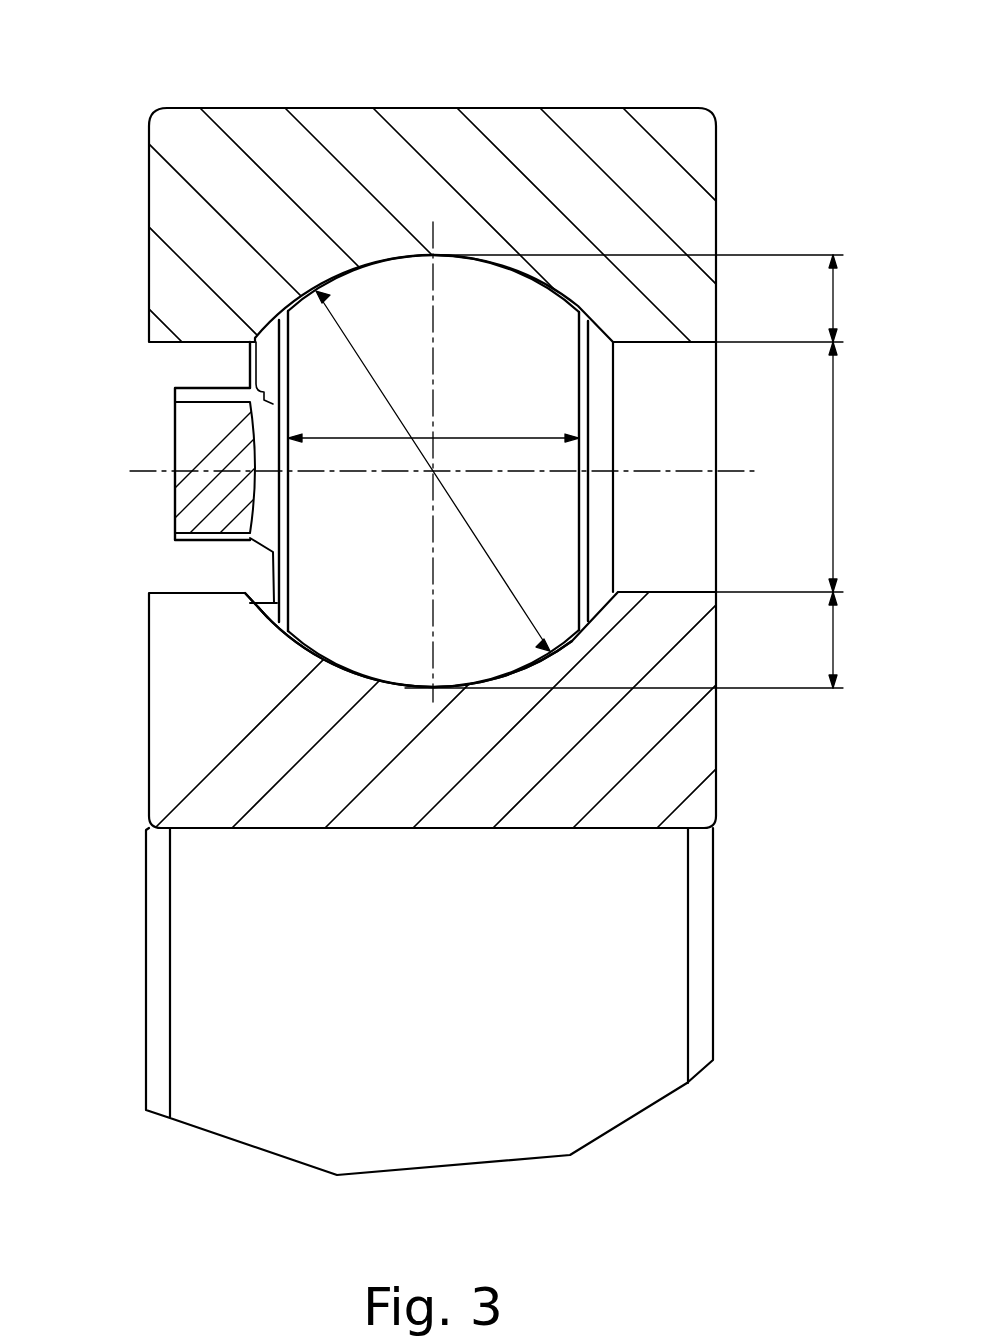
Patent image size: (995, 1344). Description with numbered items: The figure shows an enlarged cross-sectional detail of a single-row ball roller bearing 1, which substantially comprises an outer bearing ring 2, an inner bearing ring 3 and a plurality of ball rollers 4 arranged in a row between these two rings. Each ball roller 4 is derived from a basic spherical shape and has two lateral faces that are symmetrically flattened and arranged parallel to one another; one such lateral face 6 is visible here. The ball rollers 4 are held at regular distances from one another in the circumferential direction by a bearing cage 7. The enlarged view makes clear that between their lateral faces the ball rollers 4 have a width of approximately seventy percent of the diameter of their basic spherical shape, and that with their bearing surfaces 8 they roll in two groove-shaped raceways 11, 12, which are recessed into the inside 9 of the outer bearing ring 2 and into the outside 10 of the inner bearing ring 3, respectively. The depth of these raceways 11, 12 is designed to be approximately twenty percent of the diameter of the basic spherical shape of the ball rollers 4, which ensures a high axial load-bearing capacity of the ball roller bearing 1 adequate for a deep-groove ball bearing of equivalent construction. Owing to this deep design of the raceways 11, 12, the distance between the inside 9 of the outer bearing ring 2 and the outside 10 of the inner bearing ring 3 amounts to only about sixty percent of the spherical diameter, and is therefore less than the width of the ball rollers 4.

The ball roller bearing 1 is at (441, 100).
The outer bearing ring 2 is at (507, 195).
The inner bearing ring 3 is at (500, 767).
The ball roller 4 is at (533, 425).
The lateral face 6 is at (588, 537).
The bearing cage 7 is at (197, 452).
The bearing surface 8 is at (398, 762).
The inside of the outer bearing ring 9 is at (200, 348).
The outside of the inner bearing ring 10 is at (188, 588).
The groove-shaped raceway 11 is at (272, 313).
The groove-shaped raceway 12 is at (257, 612).